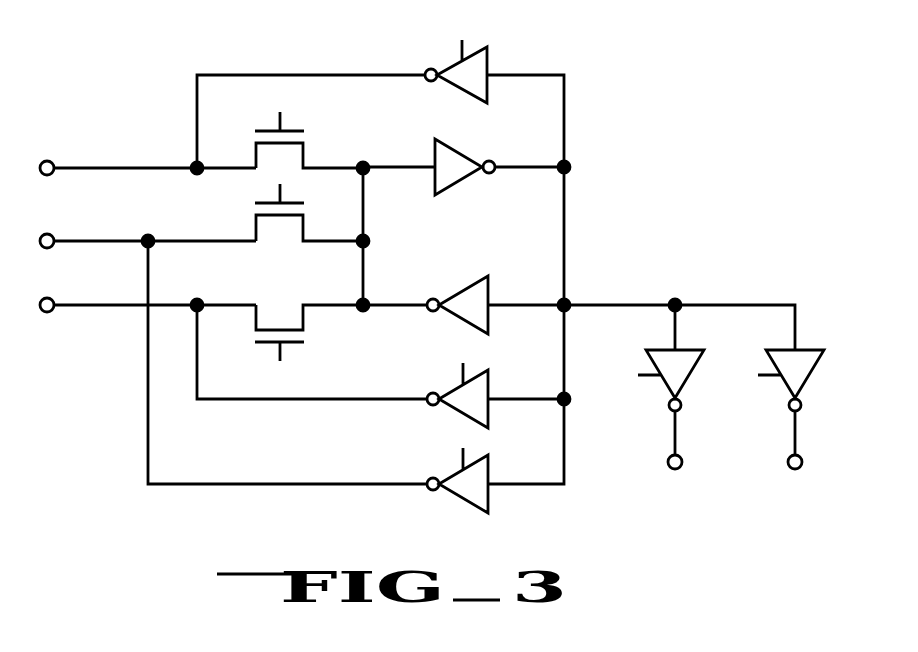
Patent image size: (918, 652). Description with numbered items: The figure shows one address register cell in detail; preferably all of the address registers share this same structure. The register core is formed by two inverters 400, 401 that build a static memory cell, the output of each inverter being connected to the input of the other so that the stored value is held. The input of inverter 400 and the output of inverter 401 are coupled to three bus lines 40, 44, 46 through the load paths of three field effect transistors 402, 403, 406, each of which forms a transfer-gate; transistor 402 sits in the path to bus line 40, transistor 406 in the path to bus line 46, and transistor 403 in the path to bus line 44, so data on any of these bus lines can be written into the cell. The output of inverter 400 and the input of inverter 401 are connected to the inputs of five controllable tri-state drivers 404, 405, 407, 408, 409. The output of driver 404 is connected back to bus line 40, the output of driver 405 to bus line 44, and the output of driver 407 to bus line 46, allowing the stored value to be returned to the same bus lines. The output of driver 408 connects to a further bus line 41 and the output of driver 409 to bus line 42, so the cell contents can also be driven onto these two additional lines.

The bus line 40 is at (91, 165).
The bus line 46 is at (90, 238).
The bus line 44 is at (82, 312).
The field effect transistor 402 is at (312, 137).
The field effect transistor 406 is at (278, 237).
The field effect transistor 403 is at (310, 333).
The inverter 400 is at (443, 141).
The controllable tri-state driver 404 is at (457, 63).
The inverter 401 is at (467, 285).
The controllable tri-state driver 405 is at (458, 417).
The controllable tri-state driver 407 is at (458, 502).
The controllable tri-state driver 408 is at (660, 383).
The controllable tri-state driver 409 is at (780, 383).
The bus line 41 is at (670, 447).
The bus line 42 is at (790, 447).